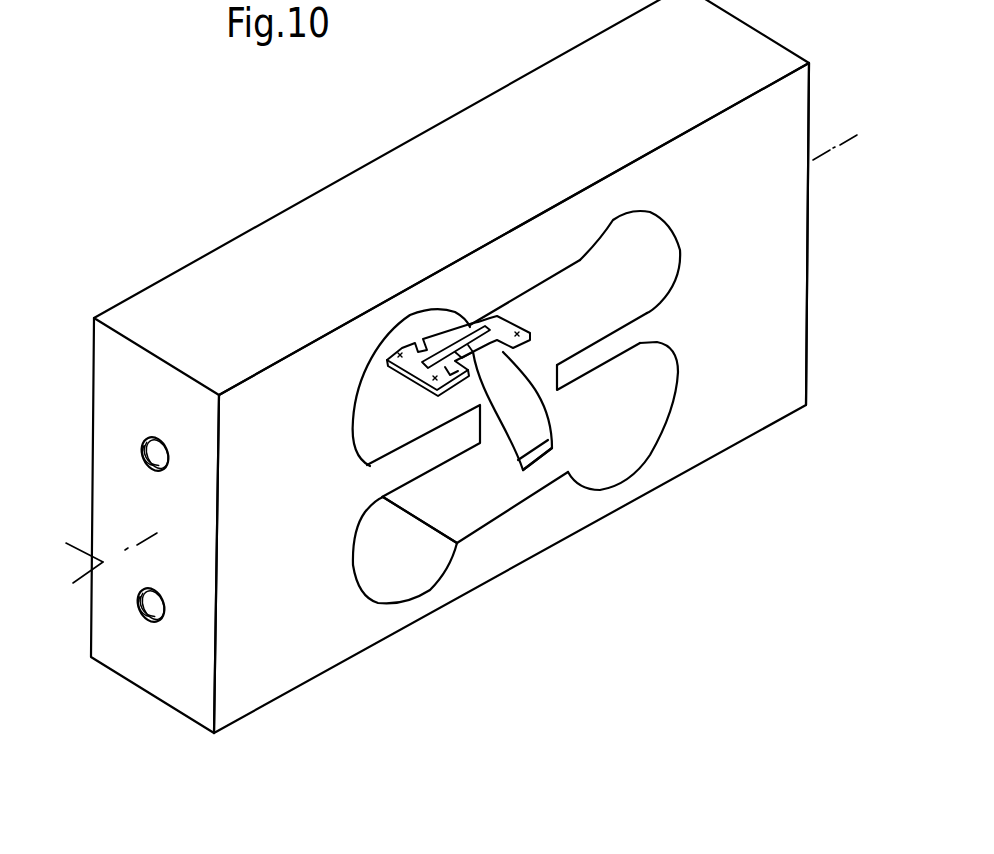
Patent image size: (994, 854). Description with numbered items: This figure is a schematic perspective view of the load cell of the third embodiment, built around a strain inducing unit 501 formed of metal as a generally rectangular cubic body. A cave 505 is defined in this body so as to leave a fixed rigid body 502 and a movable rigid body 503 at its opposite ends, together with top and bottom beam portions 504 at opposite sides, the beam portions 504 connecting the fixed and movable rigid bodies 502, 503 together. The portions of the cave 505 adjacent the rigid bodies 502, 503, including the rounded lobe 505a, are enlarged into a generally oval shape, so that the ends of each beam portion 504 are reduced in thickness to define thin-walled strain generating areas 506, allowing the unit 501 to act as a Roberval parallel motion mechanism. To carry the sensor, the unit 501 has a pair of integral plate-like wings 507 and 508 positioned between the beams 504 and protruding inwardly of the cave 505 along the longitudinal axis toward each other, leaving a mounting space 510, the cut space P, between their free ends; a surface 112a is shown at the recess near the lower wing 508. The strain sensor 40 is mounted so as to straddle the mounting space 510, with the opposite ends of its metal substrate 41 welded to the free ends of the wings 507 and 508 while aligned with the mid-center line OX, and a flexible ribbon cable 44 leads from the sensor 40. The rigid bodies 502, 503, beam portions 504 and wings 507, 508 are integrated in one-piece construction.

The strain inducing unit 501 is at (262, 201).
The fixed rigid body 502 is at (800, 103).
The movable rigid body 503 is at (150, 680).
The beam portion 504 is at (427, 143).
The cave 505 is at (548, 280).
The rounded lobe of recess 505a is at (628, 218).
The strain generating area 506 is at (403, 305).
The plate-like wing 507 is at (600, 360).
The plate-like wing 508 is at (467, 440).
The mounting space 510 is at (557, 400).
The strain sensor 40 is at (414, 369).
The substrate 41 is at (420, 362).
The flexible ribbon cable 44 is at (537, 447).
The inclined surface 112a is at (385, 582).